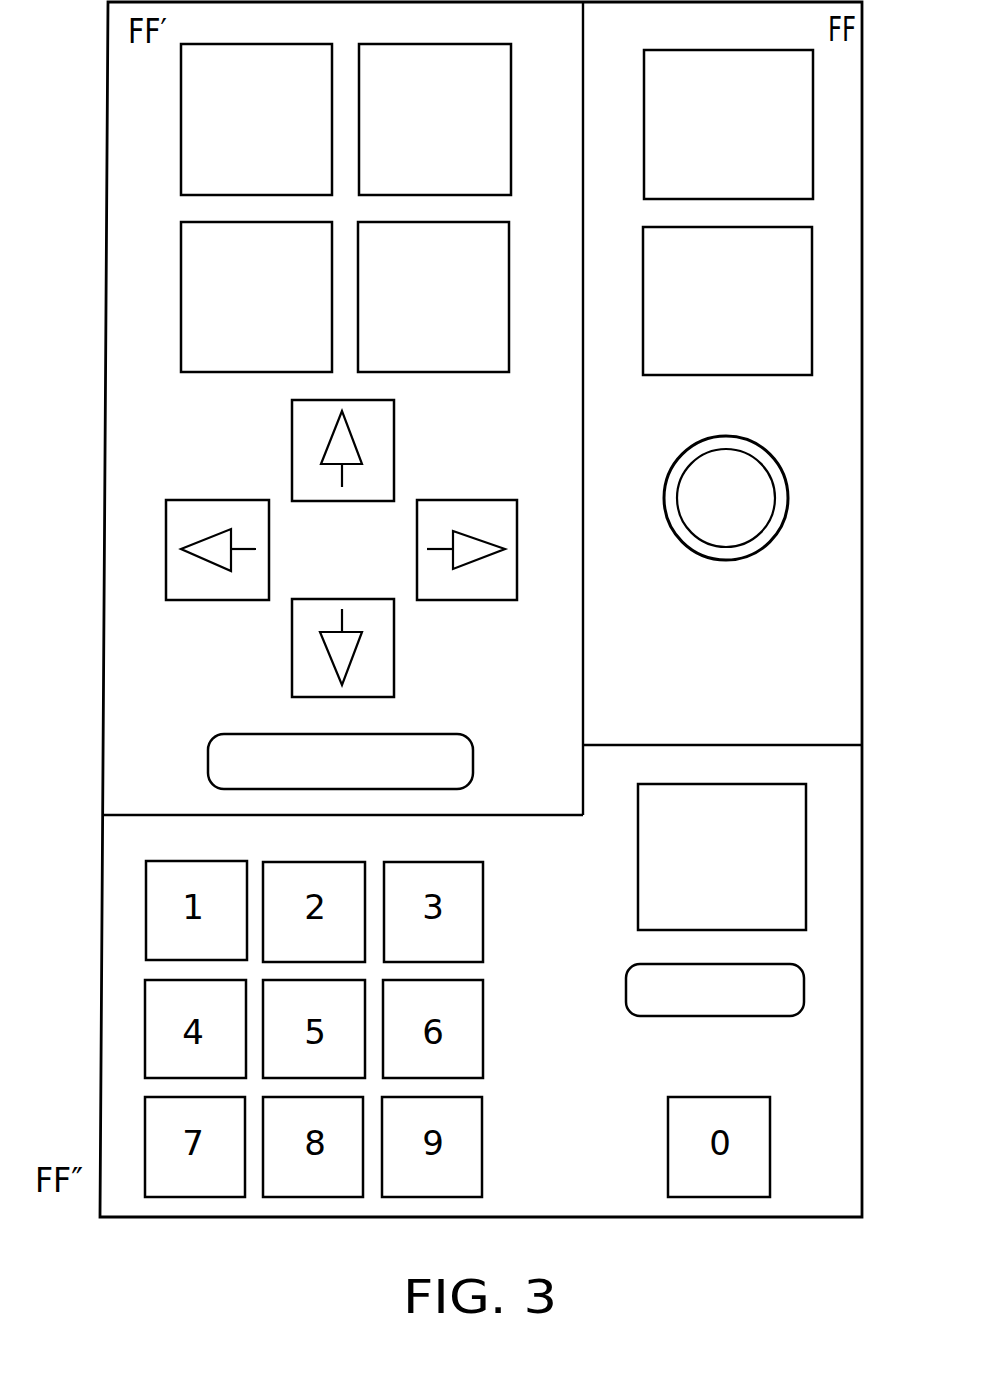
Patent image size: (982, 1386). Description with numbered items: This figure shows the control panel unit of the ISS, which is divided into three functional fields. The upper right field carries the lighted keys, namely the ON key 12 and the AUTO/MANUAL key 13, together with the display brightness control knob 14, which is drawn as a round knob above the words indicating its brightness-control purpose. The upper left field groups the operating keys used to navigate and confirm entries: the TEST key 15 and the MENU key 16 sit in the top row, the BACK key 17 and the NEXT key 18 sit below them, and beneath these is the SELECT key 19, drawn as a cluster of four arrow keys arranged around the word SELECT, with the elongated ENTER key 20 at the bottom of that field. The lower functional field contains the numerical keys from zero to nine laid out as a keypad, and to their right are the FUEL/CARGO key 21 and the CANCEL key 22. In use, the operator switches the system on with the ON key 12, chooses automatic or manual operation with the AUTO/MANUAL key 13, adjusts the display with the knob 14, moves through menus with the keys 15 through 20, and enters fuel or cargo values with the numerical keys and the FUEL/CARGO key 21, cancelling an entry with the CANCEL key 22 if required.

The ON key 12 is at (643, 90).
The AUTO/MANUAL key 13 is at (643, 263).
The display brightness control knob 14 is at (767, 448).
The TEST key 15 is at (180, 180).
The MENU key 16 is at (511, 185).
The BACK key 17 is at (180, 350).
The NEXT key 18 is at (508, 357).
The SELECT key 19 is at (454, 499).
The ENTER key 20 is at (467, 741).
The FUEL/CARGO key 21 is at (638, 898).
The CANCEL key 22 is at (627, 973).